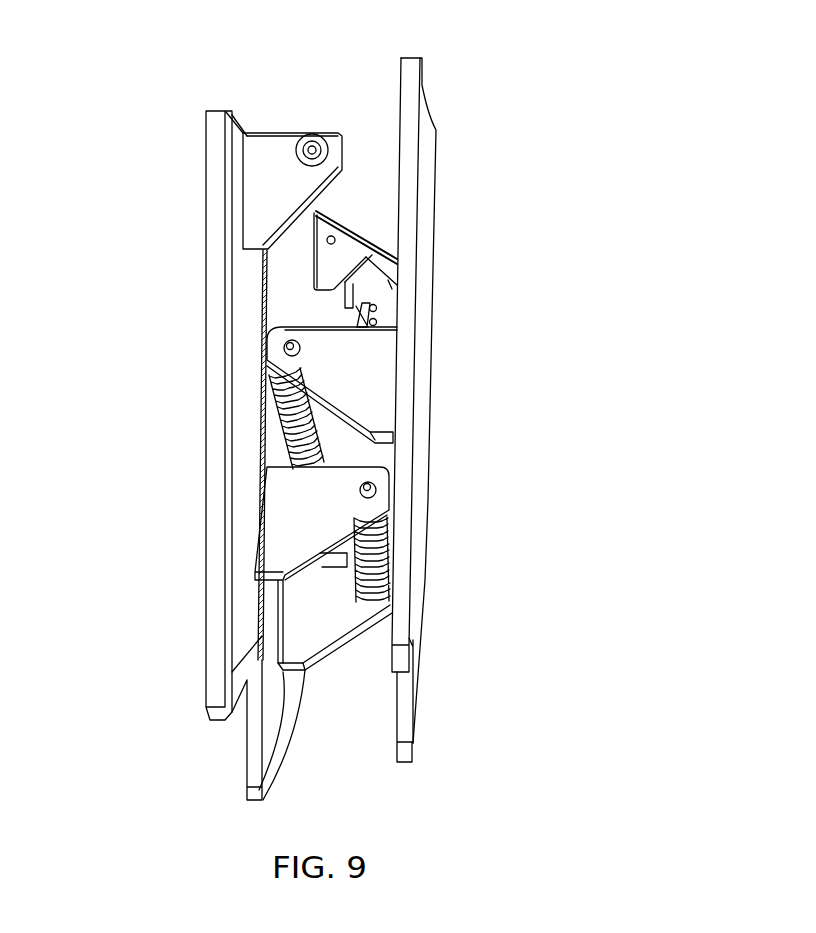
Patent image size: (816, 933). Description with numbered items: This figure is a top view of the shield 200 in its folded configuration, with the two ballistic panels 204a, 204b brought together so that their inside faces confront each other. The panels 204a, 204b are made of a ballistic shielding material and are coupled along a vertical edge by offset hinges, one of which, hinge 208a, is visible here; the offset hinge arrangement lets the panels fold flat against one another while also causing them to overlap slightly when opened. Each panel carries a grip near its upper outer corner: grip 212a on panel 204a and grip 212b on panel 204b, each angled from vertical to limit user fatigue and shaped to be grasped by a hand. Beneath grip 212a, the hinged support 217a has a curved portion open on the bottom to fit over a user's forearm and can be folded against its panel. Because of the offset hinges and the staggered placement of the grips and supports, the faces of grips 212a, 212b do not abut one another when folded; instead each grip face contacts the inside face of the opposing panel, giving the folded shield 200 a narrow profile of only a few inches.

The shield 200 is at (136, 48).
The panel 204a is at (413, 597).
The panel 204b is at (220, 475).
The offset hinge 208a is at (372, 158).
The grip 212a is at (368, 378).
The grip 212b is at (273, 534).
The support 217a is at (381, 315).